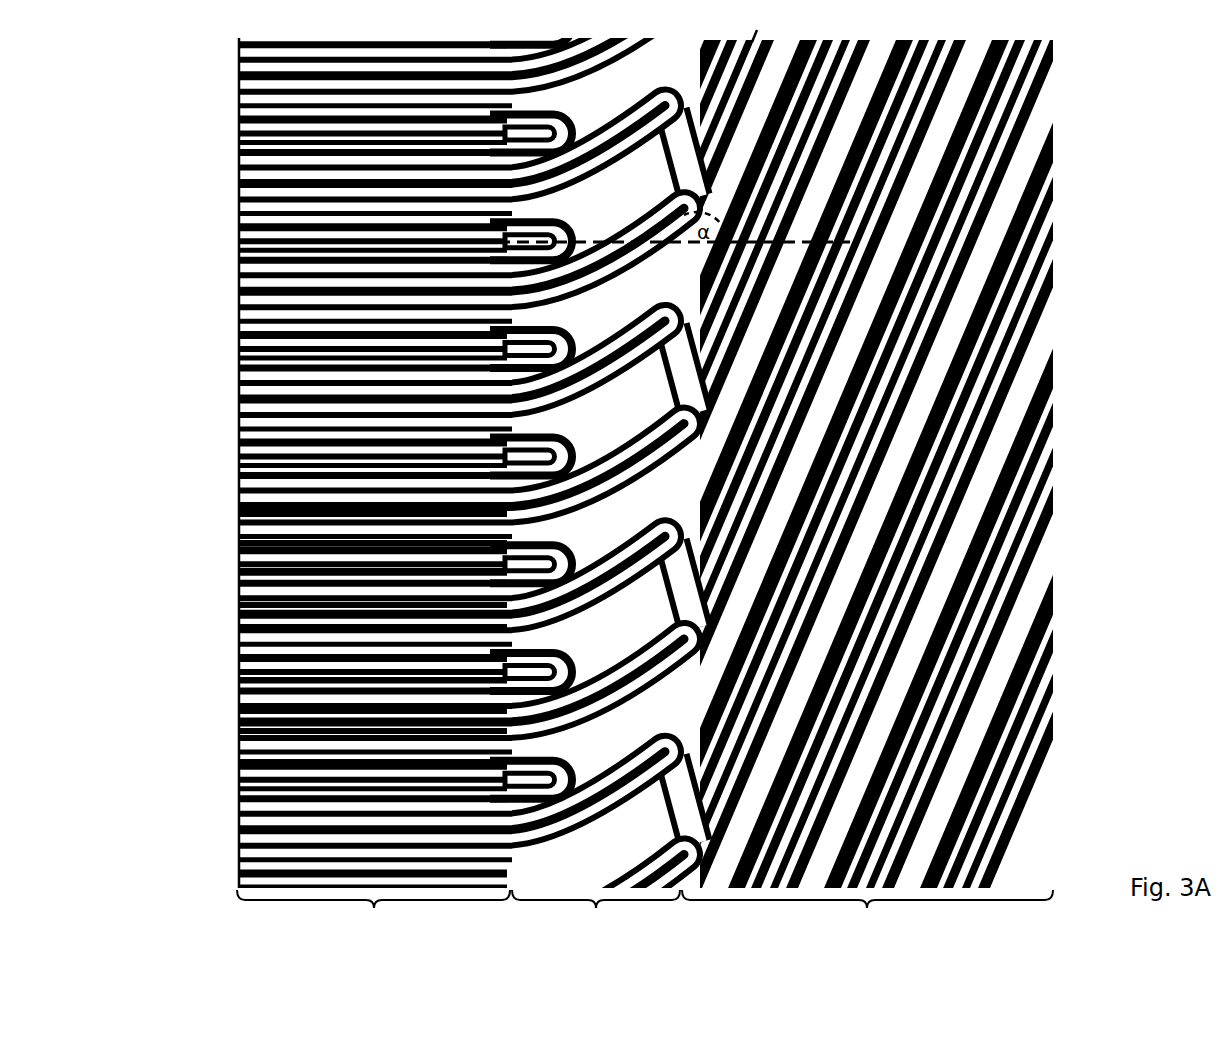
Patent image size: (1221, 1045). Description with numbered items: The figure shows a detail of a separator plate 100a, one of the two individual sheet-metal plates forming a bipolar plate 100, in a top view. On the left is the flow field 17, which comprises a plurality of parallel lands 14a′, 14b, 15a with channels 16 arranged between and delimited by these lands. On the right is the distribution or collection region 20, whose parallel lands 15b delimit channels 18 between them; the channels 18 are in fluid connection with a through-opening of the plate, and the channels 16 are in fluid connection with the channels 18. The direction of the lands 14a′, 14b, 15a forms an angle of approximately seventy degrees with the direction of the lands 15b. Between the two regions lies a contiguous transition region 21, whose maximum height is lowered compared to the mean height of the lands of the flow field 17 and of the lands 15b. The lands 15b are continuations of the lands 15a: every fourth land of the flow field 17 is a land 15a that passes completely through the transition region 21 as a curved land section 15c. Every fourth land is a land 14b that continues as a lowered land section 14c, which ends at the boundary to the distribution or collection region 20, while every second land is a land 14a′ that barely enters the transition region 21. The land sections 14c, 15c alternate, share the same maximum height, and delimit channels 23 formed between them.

The land 14a′ is at (248, 571).
The land 14b is at (248, 627).
The lowered land section 14c is at (567, 178).
The land 15a is at (248, 515).
The land 15b is at (1046, 63).
The land section 15c is at (597, 67).
The channel 16 is at (248, 543).
The flow field 17 is at (373, 921).
The channel 18 is at (1047, 130).
The distribution or collection region 20 is at (867, 920).
The transition region 21 is at (596, 920).
The channel 23 is at (608, 138).
The bipolar plate 100 is at (1104, 384).
The separator plate 100a is at (1084, 176).